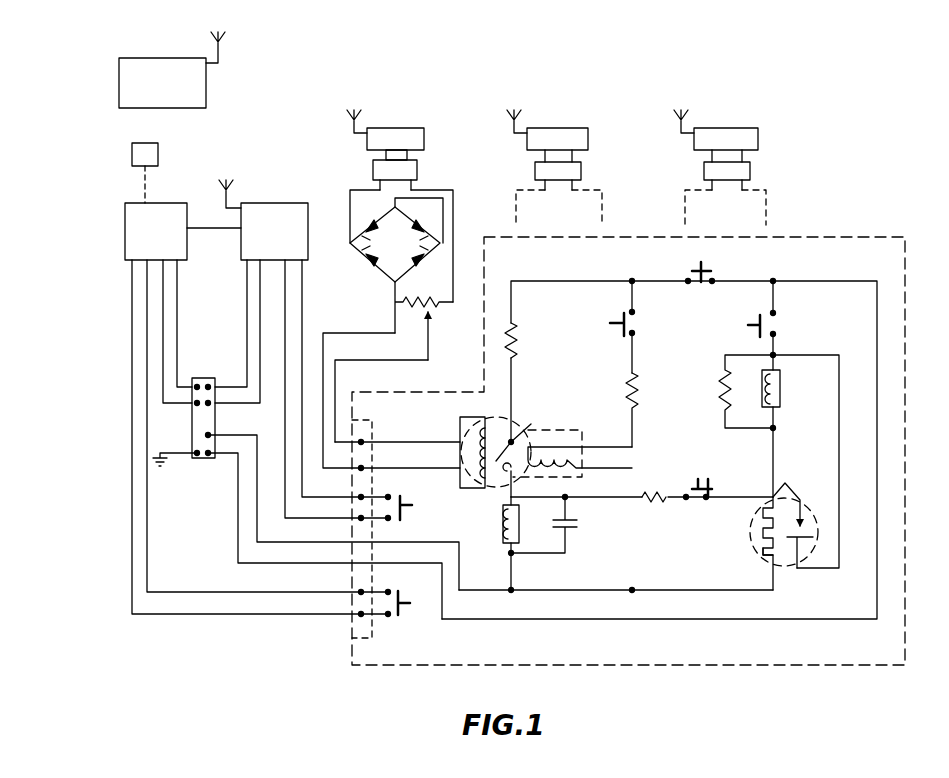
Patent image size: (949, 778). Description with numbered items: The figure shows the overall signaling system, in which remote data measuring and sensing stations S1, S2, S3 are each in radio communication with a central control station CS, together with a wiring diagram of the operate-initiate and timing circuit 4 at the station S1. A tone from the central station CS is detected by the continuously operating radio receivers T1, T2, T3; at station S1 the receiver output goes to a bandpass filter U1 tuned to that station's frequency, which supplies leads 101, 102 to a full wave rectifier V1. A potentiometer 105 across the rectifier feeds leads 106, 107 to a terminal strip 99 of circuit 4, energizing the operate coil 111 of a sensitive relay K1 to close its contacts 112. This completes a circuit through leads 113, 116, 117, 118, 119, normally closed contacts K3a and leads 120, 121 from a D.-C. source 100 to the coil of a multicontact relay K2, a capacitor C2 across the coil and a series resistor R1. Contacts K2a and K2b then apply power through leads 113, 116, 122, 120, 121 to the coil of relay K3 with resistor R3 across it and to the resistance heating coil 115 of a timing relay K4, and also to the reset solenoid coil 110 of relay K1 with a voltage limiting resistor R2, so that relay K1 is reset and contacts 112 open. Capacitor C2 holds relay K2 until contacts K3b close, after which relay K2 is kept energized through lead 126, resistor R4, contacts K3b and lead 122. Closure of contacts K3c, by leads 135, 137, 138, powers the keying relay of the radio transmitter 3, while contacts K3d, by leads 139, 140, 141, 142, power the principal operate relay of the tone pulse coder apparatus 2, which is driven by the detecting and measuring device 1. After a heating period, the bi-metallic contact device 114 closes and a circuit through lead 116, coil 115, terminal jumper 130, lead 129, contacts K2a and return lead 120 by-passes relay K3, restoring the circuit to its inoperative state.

The central control station CS is at (146, 64).
The detecting and measuring device 1 is at (132, 155).
The tone pulse coder apparatus 2 is at (183, 231).
The radio transmitter 3 is at (263, 220).
The operate-initiate and timing circuit 4 is at (629, 240).
The terminal strip 99 is at (373, 437).
The D.-C. source 100 is at (198, 430).
The lead 101 is at (350, 194).
The lead 102 is at (447, 190).
The potentiometer 105 is at (424, 319).
The lead 106 is at (364, 333).
The lead 107 is at (430, 345).
The reset solenoid coil 110 is at (578, 470).
The operate coil 111 is at (460, 457).
The relay contacts 112 is at (533, 424).
The lead 113 is at (312, 542).
The bi-metallic contact device 114 is at (814, 530).
The resistance heating coil 115 is at (765, 550).
The lead 116 is at (466, 589).
The lead 117 is at (512, 576).
The lead 118 is at (513, 381).
The lead 119 is at (565, 281).
The lead 120 is at (804, 282).
The lead 121 is at (310, 565).
The lead 122 is at (787, 446).
The lead 126 is at (340, 497).
The lead 129 is at (839, 473).
The terminal jumper 130 is at (794, 488).
The lead 135 is at (302, 519).
The lead 137 is at (249, 297).
The lead 138 is at (248, 402).
The lead 139 is at (130, 505).
The lead 140 is at (150, 523).
The lead 141 is at (163, 374).
The lead 142 is at (181, 321).
The radio receiver T1 is at (404, 130).
The radio receiver T2 is at (566, 130).
The radio receiver T3 is at (733, 130).
The remote station S1 is at (367, 164).
The remote station S2 is at (584, 168).
The remote station S3 is at (753, 168).
The bandpass filter U1 is at (417, 170).
The full wave rectifier V1 is at (368, 258).
The resistor R1 is at (638, 392).
The voltage limiting resistor R2 is at (517, 345).
The resistor R3 is at (720, 396).
The resistor R4 is at (658, 500).
The sensitive relay K1 is at (564, 433).
The multicontact relay K2 is at (503, 520).
The multicontact relay K3 is at (781, 392).
The timing relay K4 is at (750, 536).
The relay contacts K2a is at (760, 319).
The relay contacts K2b is at (622, 318).
The normally closed contacts K3a is at (708, 274).
The normally open contacts K3b is at (729, 480).
The normally open contacts K3c is at (412, 511).
The normally open contacts K3d is at (410, 612).
The capacitor C2 is at (580, 532).